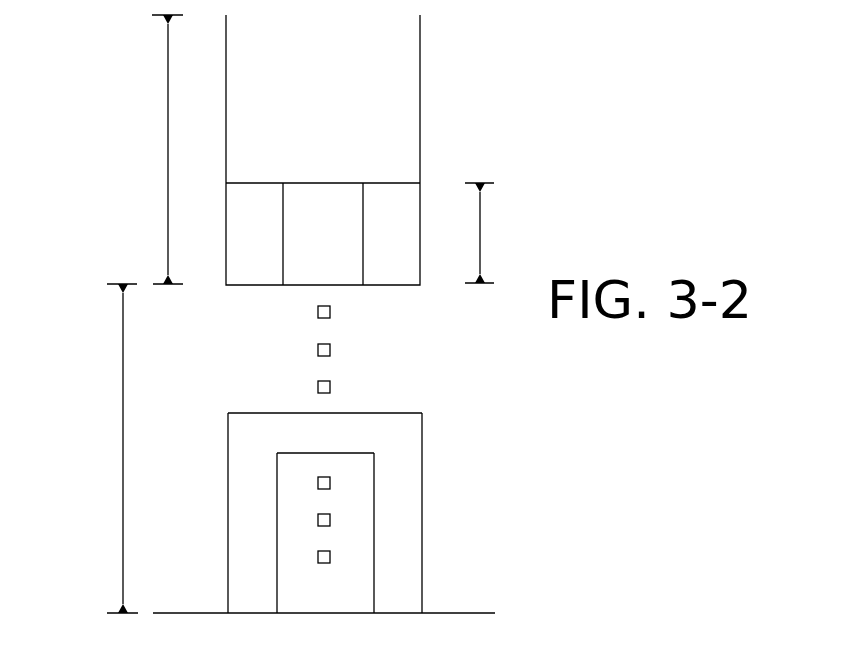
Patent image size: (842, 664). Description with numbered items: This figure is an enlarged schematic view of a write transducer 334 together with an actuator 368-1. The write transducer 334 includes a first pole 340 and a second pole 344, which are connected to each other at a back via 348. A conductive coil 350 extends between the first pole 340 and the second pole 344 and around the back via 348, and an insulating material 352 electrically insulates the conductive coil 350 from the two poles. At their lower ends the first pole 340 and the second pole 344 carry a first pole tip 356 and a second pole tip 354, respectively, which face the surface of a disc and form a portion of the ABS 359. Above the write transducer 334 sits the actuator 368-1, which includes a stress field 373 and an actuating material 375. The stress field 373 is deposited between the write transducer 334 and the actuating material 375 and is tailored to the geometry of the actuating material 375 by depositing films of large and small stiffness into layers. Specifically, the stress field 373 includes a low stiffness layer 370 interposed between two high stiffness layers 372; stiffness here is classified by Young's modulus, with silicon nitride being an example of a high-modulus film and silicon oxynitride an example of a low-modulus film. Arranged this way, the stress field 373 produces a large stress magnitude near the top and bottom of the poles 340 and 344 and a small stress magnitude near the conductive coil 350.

The actuating material 375 is at (349, 124).
The low stiffness layer 370 is at (352, 249).
The high stiffness layers 372 is at (268, 260).
The stress field 373 is at (480, 225).
The actuator 368-1 is at (168, 128).
The write transducer 334 is at (123, 432).
The first pole 340 is at (240, 540).
The second pole 344 is at (398, 558).
The back via 348 is at (372, 428).
The insulating material 352 is at (378, 348).
The conductive coil 350 is at (320, 477).
The first pole tip 356 is at (253, 613).
The second pole tip 354 is at (390, 613).
The ABS 359 is at (470, 613).